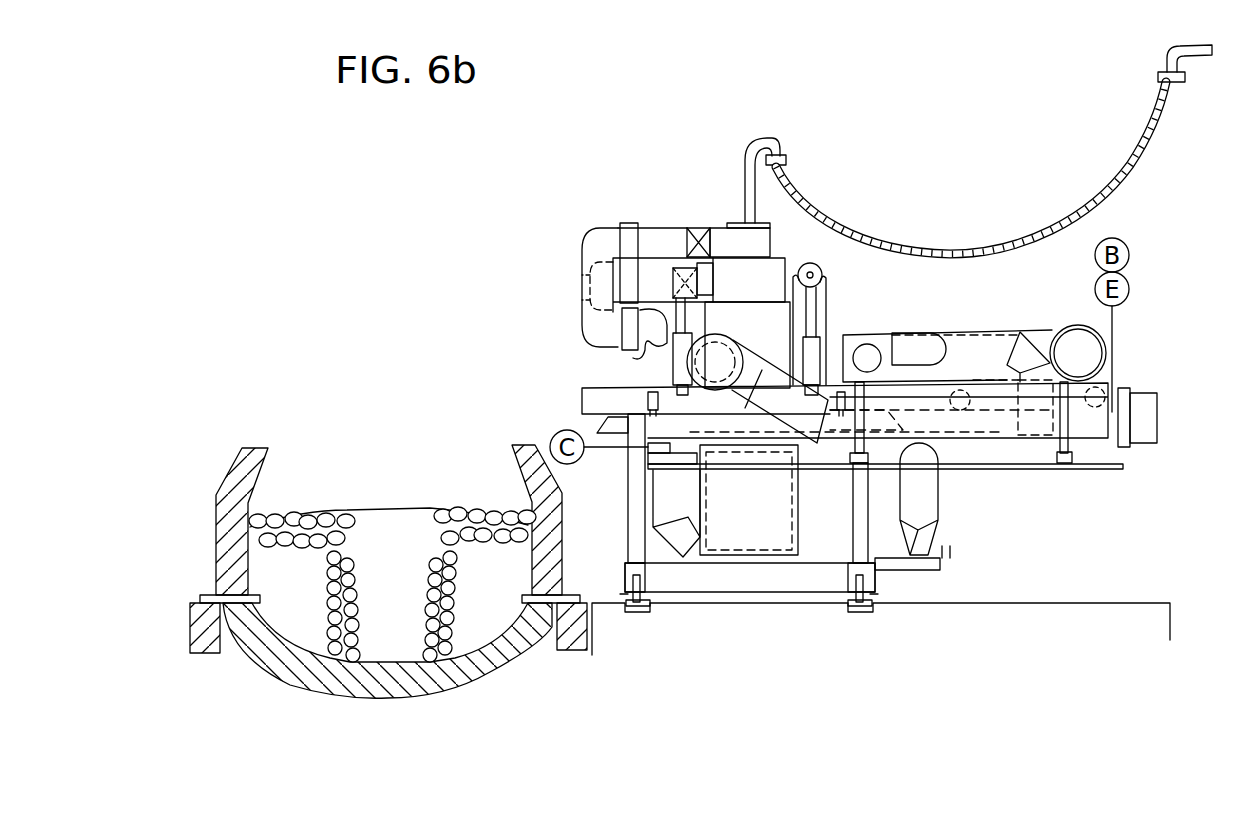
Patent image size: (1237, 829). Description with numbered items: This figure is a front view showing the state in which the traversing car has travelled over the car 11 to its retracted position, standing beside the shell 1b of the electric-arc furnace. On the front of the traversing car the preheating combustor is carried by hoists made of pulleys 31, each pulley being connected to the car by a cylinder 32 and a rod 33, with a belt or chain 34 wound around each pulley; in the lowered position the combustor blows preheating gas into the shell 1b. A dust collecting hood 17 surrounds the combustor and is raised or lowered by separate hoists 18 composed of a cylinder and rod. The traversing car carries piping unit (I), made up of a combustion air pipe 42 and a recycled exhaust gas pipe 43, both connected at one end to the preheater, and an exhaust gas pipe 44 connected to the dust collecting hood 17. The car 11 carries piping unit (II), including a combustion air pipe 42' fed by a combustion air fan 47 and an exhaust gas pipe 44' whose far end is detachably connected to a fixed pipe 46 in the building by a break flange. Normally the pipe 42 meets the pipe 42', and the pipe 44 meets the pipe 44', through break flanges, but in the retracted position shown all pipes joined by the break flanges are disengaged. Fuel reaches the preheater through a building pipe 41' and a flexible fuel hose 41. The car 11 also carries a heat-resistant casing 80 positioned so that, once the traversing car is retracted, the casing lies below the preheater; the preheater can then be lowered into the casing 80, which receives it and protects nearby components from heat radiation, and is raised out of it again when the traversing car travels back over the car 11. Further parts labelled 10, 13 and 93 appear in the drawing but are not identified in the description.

The shell 1b is at (220, 536).
The support posts 10 is at (637, 610).
The car 11 is at (766, 580).
The pivot points 13 is at (967, 392).
The dust collecting hood 17 is at (600, 428).
The hoists 18 is at (630, 394).
The pulleys 31 is at (683, 266).
The cylinder 32 is at (668, 353).
The rod 33 is at (822, 303).
The belt or chain 34 is at (827, 286).
The fuel hose 41 is at (955, 168).
The fuel pipe 41' is at (1172, 49).
The combustion air pipe 42 is at (747, 293).
The combustion air pipe 42' is at (686, 551).
The recycled exhaust gas pipe 43 is at (656, 275).
The exhaust gas pipe 44 is at (974, 365).
The exhaust gas pipe 44' is at (885, 439).
The fixed pipe 46 is at (1156, 443).
The combustion air fan 47 is at (922, 505).
The heat-resistant casing 80 is at (790, 494).
The fasteners 93 is at (626, 596).